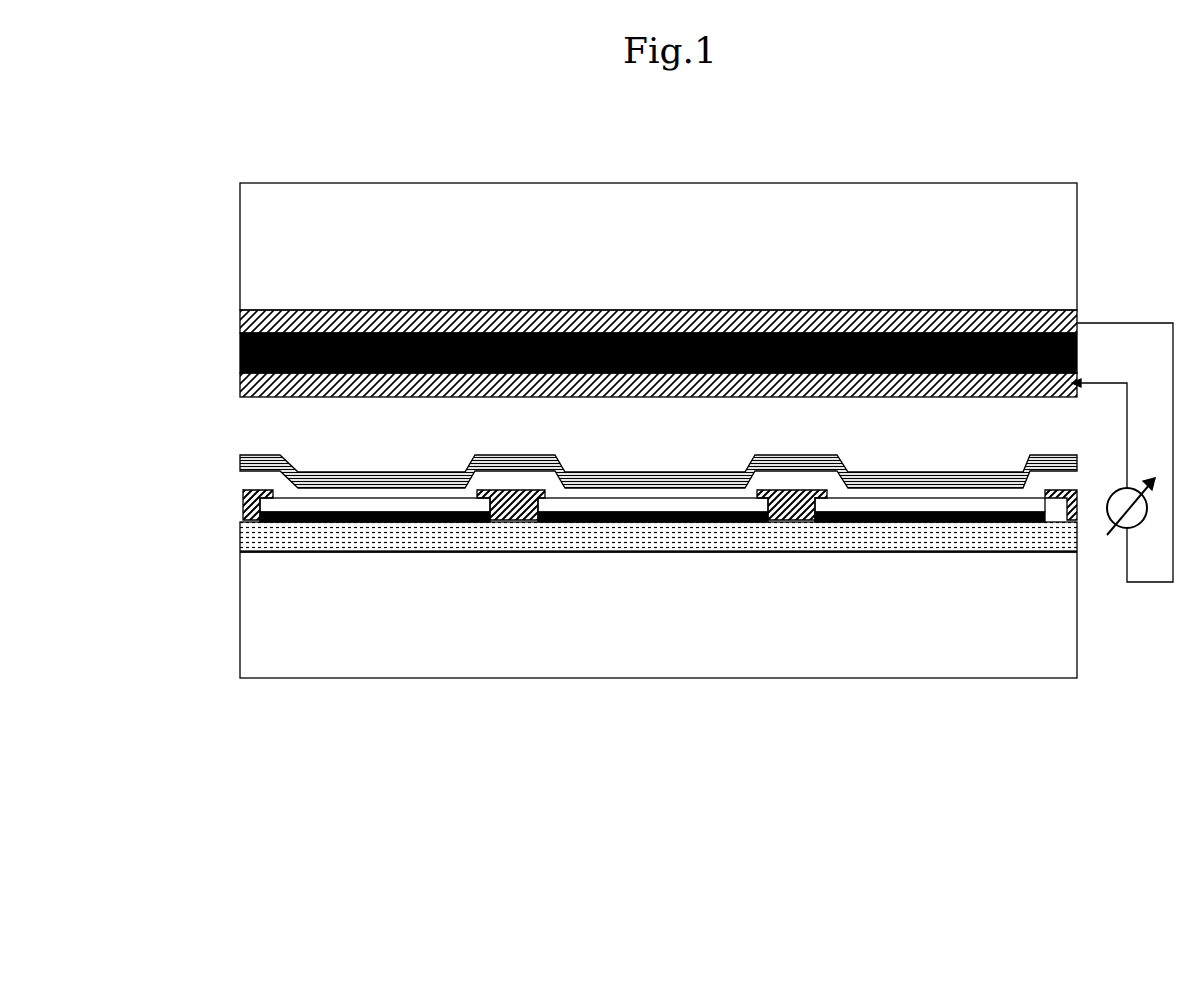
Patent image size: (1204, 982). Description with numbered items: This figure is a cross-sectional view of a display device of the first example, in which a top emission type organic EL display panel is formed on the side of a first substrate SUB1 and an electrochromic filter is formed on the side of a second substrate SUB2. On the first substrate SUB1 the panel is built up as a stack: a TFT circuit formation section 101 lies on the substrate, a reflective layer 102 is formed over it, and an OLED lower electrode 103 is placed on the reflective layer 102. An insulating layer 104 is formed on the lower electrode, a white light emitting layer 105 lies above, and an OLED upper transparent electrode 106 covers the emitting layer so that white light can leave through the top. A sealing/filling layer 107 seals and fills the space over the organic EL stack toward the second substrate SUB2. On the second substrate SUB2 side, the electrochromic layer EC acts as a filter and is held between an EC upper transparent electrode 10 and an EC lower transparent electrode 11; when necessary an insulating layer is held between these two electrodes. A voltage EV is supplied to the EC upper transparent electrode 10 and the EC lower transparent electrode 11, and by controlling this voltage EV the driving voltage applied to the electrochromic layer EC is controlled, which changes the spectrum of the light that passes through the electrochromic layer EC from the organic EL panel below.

The second substrate SUB2 is at (257, 250).
The EC upper transparent electrode 10 is at (425, 327).
The electrochromic layer EC is at (270, 350).
The EC lower transparent electrode 11 is at (570, 393).
The sealing/filling layer 107 is at (290, 428).
The OLED upper transparent electrode 106 is at (290, 472).
The white light emitting layer 105 is at (290, 493).
The insulating layer 104 is at (255, 510).
The OLED lower electrode 103 is at (262, 532).
The reflective layer 102 is at (330, 537).
The TFT circuit formation section 101 is at (412, 540).
The first substrate SUB1 is at (263, 662).
The voltage EV is at (1120, 486).